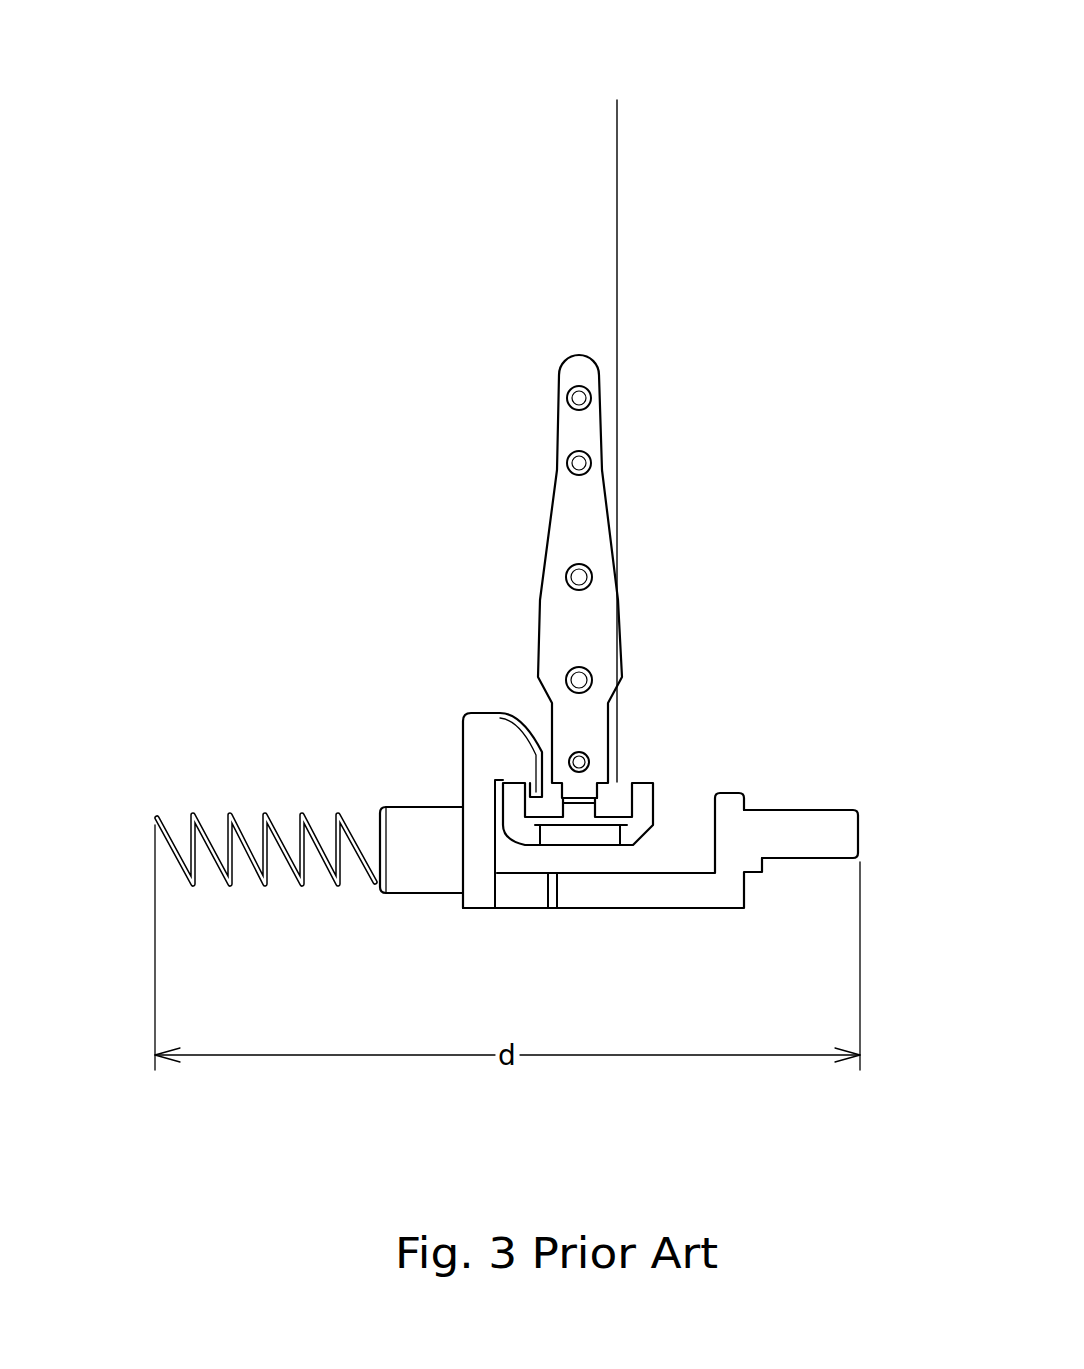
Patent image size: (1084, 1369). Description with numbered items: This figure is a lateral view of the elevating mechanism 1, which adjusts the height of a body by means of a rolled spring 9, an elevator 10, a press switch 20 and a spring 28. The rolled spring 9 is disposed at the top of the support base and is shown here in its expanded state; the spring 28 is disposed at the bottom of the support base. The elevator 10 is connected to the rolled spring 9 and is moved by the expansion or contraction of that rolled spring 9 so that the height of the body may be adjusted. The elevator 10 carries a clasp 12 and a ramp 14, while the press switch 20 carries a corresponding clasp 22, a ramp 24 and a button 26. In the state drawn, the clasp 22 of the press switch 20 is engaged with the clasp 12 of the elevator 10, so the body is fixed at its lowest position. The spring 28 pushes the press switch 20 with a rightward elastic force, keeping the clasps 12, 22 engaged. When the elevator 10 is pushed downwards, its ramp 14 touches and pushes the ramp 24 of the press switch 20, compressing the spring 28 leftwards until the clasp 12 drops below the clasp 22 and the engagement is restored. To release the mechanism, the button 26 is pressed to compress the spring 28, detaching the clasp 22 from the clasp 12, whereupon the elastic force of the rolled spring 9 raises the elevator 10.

The elevating mechanism 1 is at (721, 98).
The rolled spring 9 is at (621, 343).
The elevator 10 is at (600, 540).
The clasp 12 is at (512, 797).
The ramp 14 is at (510, 833).
The press switch 20 is at (755, 910).
The clasp 22 is at (533, 785).
The ramp 24 is at (521, 727).
The button 26 is at (812, 808).
The spring 28 is at (262, 883).